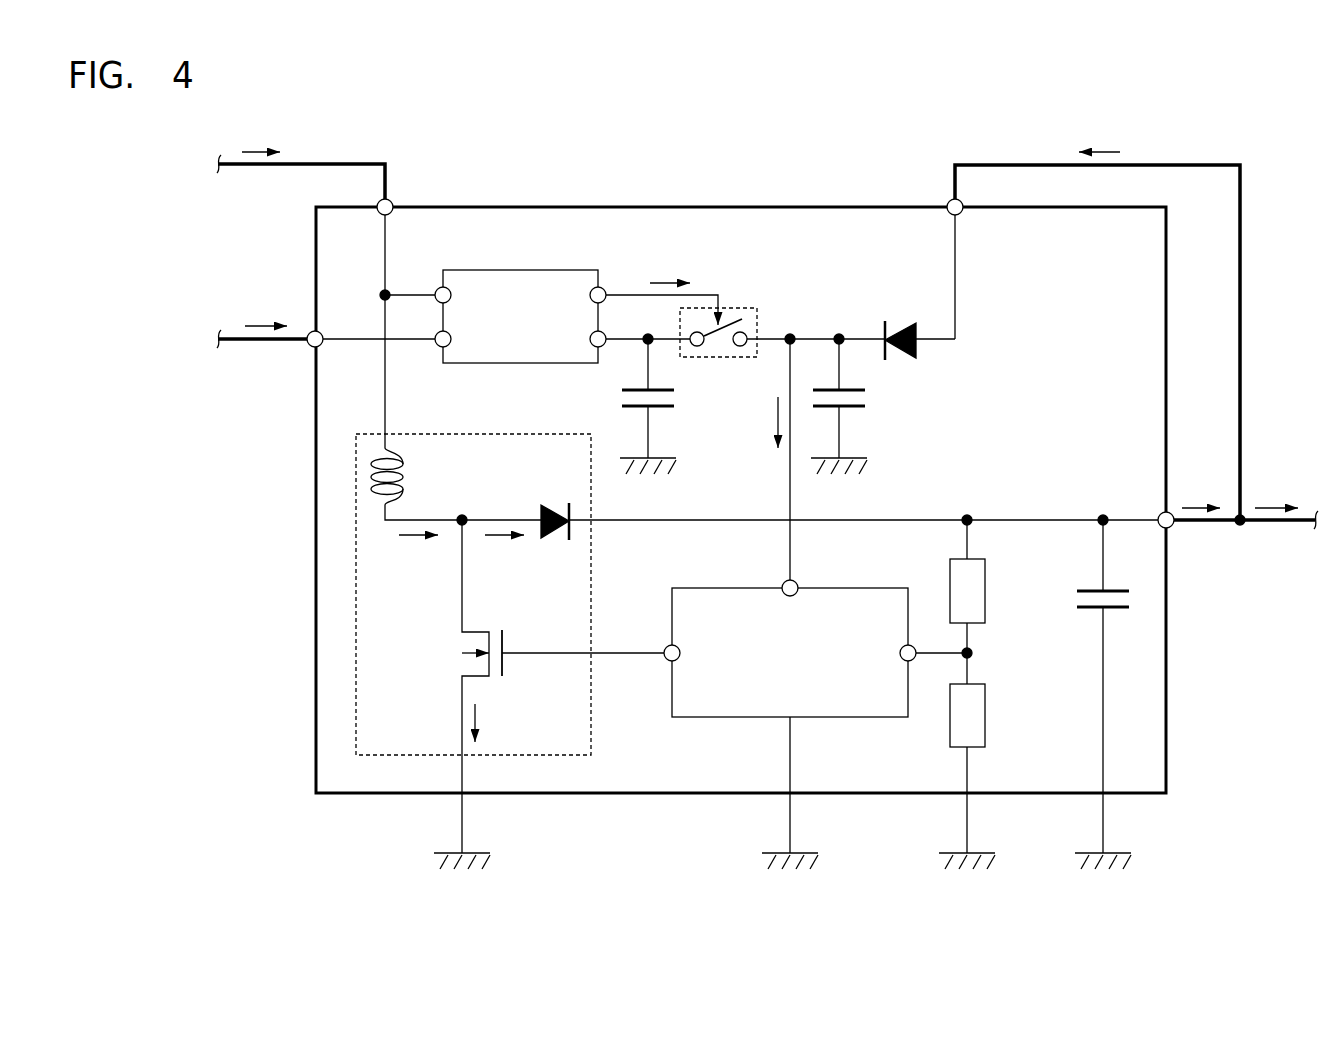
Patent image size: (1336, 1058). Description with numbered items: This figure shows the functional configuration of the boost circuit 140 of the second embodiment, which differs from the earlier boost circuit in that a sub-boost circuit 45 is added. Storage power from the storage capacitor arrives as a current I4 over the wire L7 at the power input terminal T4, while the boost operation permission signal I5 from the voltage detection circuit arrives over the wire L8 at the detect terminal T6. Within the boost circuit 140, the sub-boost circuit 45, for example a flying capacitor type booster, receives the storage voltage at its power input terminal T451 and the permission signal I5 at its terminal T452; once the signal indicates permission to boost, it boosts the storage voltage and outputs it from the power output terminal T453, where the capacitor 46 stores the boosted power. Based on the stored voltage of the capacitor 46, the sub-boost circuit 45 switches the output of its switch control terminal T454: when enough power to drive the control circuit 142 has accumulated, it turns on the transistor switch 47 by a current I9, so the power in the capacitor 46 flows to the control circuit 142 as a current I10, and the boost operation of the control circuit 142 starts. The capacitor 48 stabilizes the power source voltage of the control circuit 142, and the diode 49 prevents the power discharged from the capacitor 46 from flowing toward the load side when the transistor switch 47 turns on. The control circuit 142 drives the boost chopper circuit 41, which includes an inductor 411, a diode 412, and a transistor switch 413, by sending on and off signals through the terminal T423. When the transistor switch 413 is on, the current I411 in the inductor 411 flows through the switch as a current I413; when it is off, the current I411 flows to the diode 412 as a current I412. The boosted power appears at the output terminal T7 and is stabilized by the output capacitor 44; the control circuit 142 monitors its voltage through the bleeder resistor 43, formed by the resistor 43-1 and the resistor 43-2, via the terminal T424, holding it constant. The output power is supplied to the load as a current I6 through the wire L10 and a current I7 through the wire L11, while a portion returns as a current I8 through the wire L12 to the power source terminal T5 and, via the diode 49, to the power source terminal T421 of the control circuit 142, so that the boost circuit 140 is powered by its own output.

The boost circuit 140 is at (740, 206).
The sub-boost circuit 45 is at (522, 269).
The transistor switch 47 is at (745, 306).
The diode 49 is at (912, 325).
The capacitor 46 is at (667, 408).
The capacitor 48 is at (858, 408).
The boost chopper circuit 41 is at (592, 731).
The inductor 411 is at (410, 480).
The diode 412 is at (553, 503).
The transistor switch 413 is at (505, 637).
The control circuit 142 is at (848, 586).
The bleeder resistor 43 is at (1015, 694).
The resistor 43-1 is at (985, 590).
The resistor 43-2 is at (996, 704).
The output capacitor 44 is at (1112, 612).
The terminal T4 is at (398, 198).
The terminal T5 is at (947, 200).
The terminal T6 is at (303, 350).
The terminal T7 is at (1158, 512).
The terminal T451 is at (440, 286).
The terminal T452 is at (437, 348).
The terminal T453 is at (601, 349).
The terminal T454 is at (602, 287).
The terminal T421 is at (782, 582).
The terminal T423 is at (667, 643).
The terminal T424 is at (912, 665).
The power line L7 is at (341, 162).
The power line L8 is at (256, 345).
The wire L10 is at (1193, 528).
The wire L11 is at (1266, 528).
The wire L12 is at (1243, 300).
The current I4 is at (256, 148).
The boost operation permission signal I5 is at (256, 322).
The current I6 is at (1196, 505).
The current I7 is at (1270, 505).
The current I8 is at (1103, 150).
The current I9 is at (671, 280).
The current I10 is at (776, 415).
The current I411 is at (414, 545).
The current I412 is at (506, 545).
The current I413 is at (488, 719).